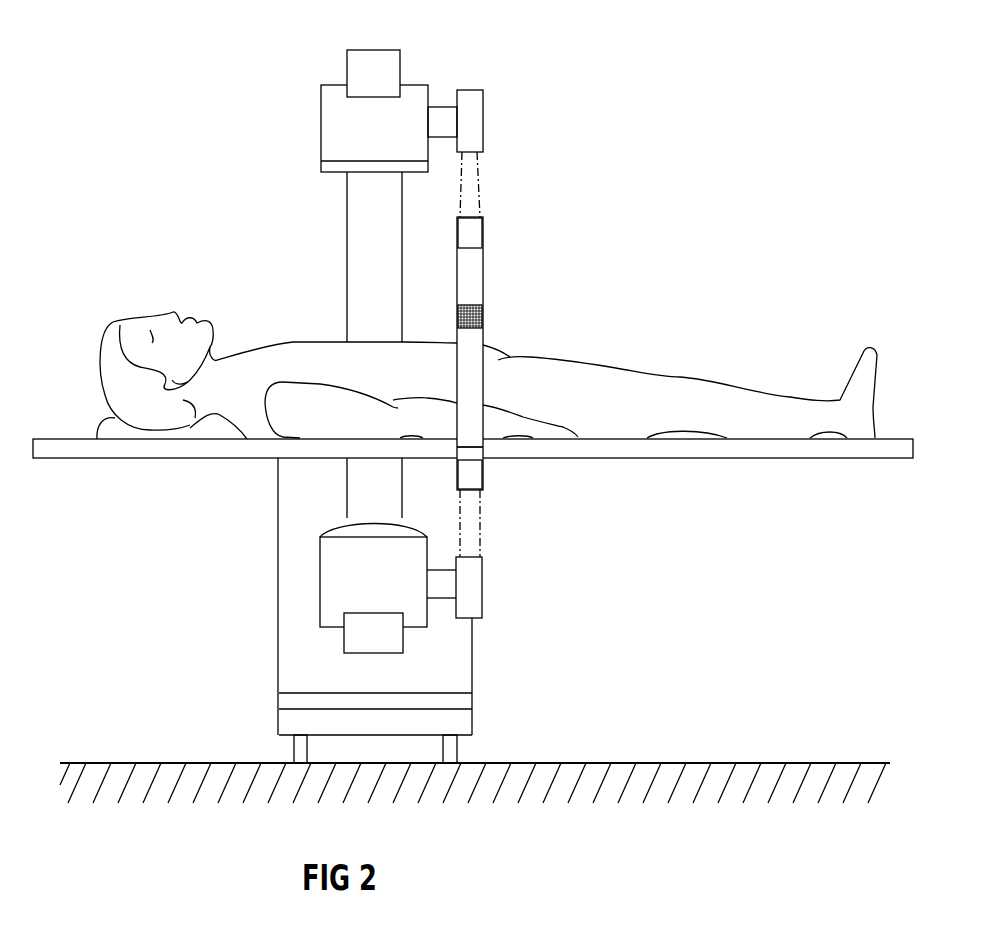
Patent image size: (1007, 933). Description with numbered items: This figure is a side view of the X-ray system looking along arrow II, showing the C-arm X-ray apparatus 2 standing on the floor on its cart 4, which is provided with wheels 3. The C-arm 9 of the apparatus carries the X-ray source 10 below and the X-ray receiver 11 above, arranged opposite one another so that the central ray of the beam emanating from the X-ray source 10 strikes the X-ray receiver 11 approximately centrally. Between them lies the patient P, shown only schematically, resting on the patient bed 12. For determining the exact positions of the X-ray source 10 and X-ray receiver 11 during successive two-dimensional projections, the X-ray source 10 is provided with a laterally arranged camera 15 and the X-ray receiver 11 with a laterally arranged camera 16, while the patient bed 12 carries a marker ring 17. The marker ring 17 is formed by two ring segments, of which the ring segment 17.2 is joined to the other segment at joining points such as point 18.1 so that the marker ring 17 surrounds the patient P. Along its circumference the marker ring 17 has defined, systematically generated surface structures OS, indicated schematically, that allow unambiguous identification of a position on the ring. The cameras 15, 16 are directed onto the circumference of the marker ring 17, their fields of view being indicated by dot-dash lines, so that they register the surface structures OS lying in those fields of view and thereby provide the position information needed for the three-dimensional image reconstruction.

The C-arm X-ray apparatus 2 is at (292, 648).
The wheels 3 is at (300, 752).
The cart 4 is at (278, 597).
The C-arm 9 is at (390, 28).
The X-ray source 10 is at (345, 557).
The X-ray receiver 11 is at (348, 140).
The patient bed 12 is at (738, 447).
The camera 15 is at (472, 587).
The camera 16 is at (513, 48).
The marker ring 17 is at (483, 277).
The ring segment 17.2 is at (472, 233).
The joining point 18.1 is at (481, 445).
The surface structures OS is at (482, 315).
The patient P is at (303, 350).